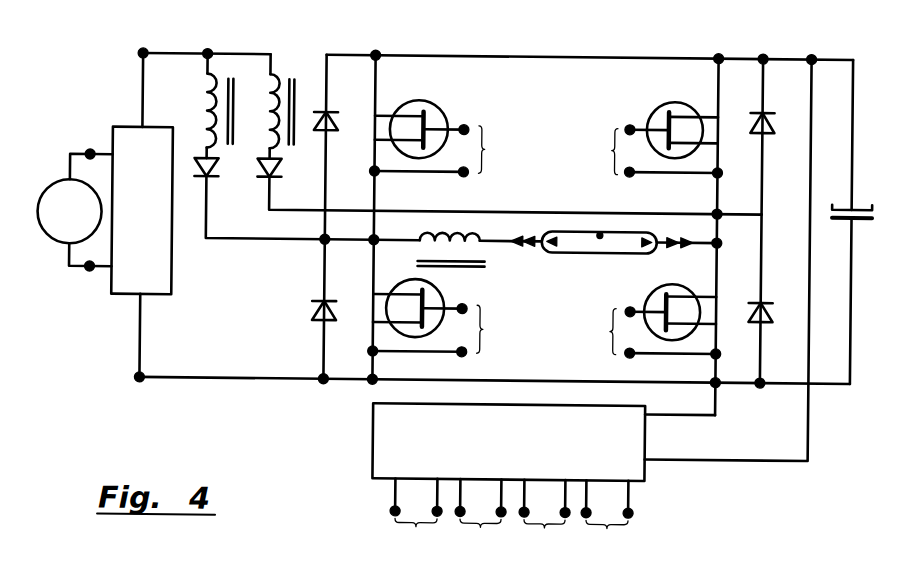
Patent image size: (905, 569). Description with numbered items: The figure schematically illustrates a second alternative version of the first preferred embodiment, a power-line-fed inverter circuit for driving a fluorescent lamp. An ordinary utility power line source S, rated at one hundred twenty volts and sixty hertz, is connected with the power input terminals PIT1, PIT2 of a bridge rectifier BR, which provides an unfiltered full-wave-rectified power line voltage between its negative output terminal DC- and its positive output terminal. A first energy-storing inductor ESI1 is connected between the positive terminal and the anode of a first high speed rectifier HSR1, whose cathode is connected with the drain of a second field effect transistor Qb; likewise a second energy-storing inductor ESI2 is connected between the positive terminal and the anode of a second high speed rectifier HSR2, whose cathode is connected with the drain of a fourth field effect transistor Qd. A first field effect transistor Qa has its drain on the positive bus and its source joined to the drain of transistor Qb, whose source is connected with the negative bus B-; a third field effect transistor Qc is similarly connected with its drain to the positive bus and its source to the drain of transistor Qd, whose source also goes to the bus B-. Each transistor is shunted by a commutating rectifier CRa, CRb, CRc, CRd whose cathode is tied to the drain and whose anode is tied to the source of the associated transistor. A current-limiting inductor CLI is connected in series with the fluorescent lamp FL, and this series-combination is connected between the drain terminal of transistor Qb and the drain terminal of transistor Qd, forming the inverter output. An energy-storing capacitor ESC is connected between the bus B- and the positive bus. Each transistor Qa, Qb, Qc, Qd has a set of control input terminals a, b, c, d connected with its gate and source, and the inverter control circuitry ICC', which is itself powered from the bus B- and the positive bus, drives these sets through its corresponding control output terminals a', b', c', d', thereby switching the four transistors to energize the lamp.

The negative output terminal of bridge rectifier DC- is at (139, 381).
The B- bus B- is at (185, 381).
The source S is at (69, 211).
The power input terminal PIT1 is at (90, 154).
The power input terminal PIT2 is at (90, 273).
The bridge rectifier BR is at (124, 298).
The first energy-storing inductor ESI1 is at (237, 92).
The second energy-storing inductor ESI2 is at (297, 82).
The first high speed rectifier HSR1 is at (199, 181).
The second high speed rectifier HSR2 is at (262, 181).
The commutating rectifier CRa is at (338, 124).
The commutating rectifier CRb is at (313, 311).
The commutating rectifier CRc is at (775, 126).
The commutating rectifier CRd is at (775, 313).
The first field effect transistor Qa is at (437, 106).
The second field effect transistor Qb is at (443, 297).
The third field effect transistor Qc is at (668, 103).
The fourth field effect transistor Qd is at (657, 288).
The energy-storing capacitor ESC is at (832, 208).
The current-limiting inductor CLI is at (485, 266).
The fluorescent lamp FL is at (595, 253).
The inverter control circuitry ICC' is at (548, 268).
The control input terminals a is at (480, 151).
The control input terminals b is at (479, 331).
The control input terminals c is at (617, 150).
The control input terminals d is at (617, 332).
The control output terminals a' is at (416, 514).
The control output terminals b' is at (481, 515).
The control output terminals c' is at (545, 516).
The control output terminals d' is at (607, 516).